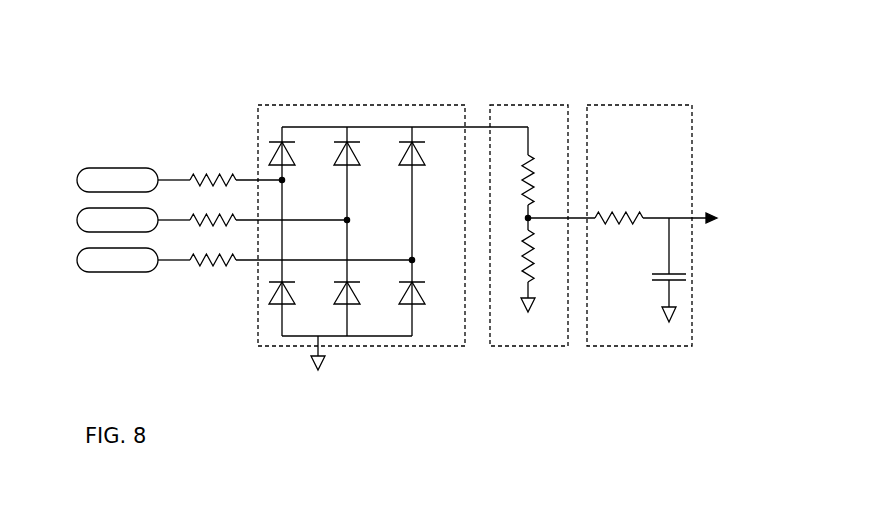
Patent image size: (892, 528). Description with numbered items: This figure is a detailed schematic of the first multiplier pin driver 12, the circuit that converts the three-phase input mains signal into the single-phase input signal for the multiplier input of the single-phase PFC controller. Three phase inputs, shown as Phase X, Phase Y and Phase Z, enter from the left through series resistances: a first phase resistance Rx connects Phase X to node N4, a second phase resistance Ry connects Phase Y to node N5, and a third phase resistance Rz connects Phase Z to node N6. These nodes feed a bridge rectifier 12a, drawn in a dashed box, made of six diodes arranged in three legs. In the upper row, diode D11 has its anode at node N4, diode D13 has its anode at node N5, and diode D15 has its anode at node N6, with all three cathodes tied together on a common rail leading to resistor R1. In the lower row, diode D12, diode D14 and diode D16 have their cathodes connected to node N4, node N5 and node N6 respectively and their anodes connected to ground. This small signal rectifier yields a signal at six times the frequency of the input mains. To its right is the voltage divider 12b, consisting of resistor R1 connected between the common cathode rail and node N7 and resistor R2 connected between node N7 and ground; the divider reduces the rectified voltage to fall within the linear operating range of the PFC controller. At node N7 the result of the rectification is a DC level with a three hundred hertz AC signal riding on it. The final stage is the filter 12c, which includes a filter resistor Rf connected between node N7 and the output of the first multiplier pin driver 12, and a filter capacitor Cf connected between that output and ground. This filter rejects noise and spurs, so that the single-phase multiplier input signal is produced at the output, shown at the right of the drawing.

The first multiplier pin driver 12 is at (103, 113).
The bridge rectifier 12a is at (259, 105).
The voltage divider 12b is at (491, 105).
The filter 12c is at (590, 105).
The first phase resistance Rx is at (179, 173).
The second phase resistance Ry is at (212, 213).
The third phase resistance Rz is at (244, 253).
The diode D11 is at (297, 153).
The diode D12 is at (297, 293).
The diode D13 is at (362, 153).
The diode D14 is at (362, 293).
The diode D15 is at (427, 153).
The diode D16 is at (427, 293).
The node N4 is at (293, 188).
The node N5 is at (358, 228).
The node N6 is at (422, 250).
The node N7 is at (514, 218).
The resistor R1 is at (541, 180).
The resistor R2 is at (541, 256).
The filter resistor Rf is at (619, 207).
The filter capacitor Cf is at (663, 262).